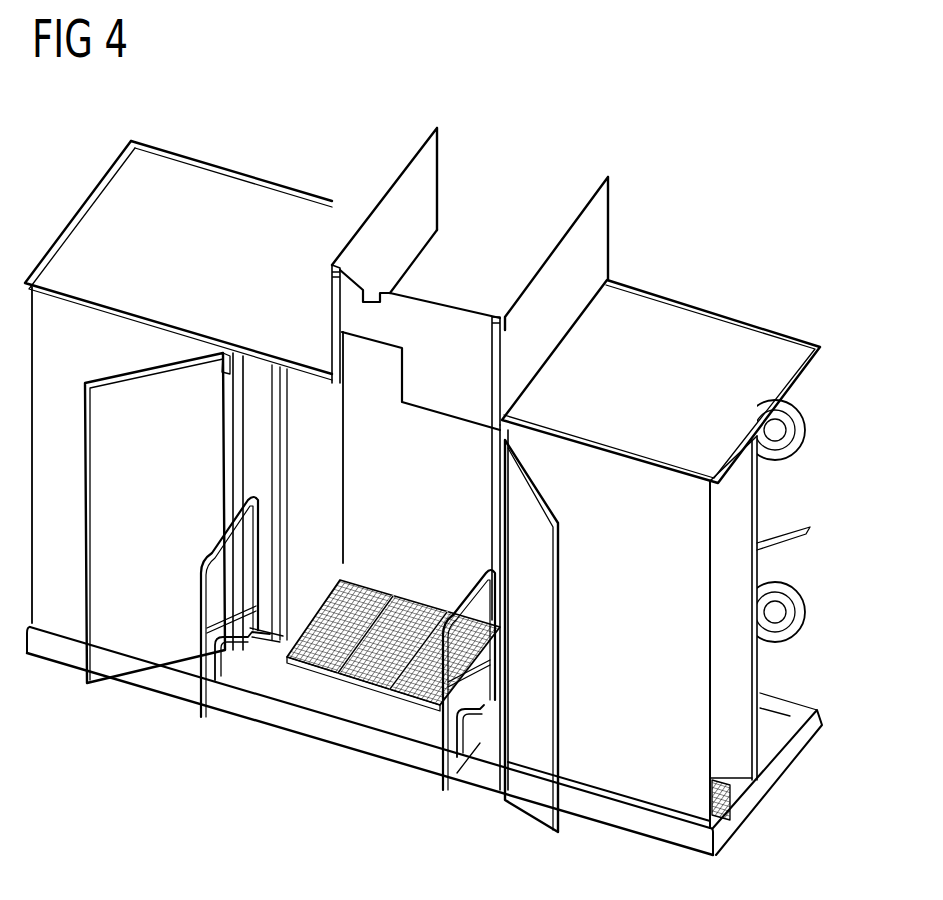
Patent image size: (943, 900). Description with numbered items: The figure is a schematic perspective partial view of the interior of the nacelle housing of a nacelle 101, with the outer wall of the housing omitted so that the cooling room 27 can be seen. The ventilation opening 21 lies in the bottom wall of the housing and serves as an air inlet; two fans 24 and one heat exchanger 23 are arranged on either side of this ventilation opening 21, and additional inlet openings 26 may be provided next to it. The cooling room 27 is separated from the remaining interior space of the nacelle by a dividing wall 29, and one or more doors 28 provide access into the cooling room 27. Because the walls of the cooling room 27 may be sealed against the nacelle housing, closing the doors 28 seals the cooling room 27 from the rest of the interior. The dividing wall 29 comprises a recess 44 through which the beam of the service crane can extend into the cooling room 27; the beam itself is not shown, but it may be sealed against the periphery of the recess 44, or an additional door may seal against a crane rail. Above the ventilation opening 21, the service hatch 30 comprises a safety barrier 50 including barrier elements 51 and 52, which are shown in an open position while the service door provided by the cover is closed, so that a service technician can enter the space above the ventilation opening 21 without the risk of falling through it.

The nacelle 101 is at (712, 135).
The ventilation opening 21 is at (373, 593).
The heat exchanger 23 is at (757, 672).
The fan 24 is at (790, 452).
The additional inlet opening 26 is at (712, 788).
The cooling room 27 is at (778, 786).
The door 28 is at (98, 667).
The dividing wall 29 is at (680, 808).
The service hatch 30 is at (412, 522).
The recess 44 is at (372, 380).
The safety barrier 50 is at (213, 713).
The barrier element 51 is at (205, 697).
The barrier element 52 is at (456, 790).